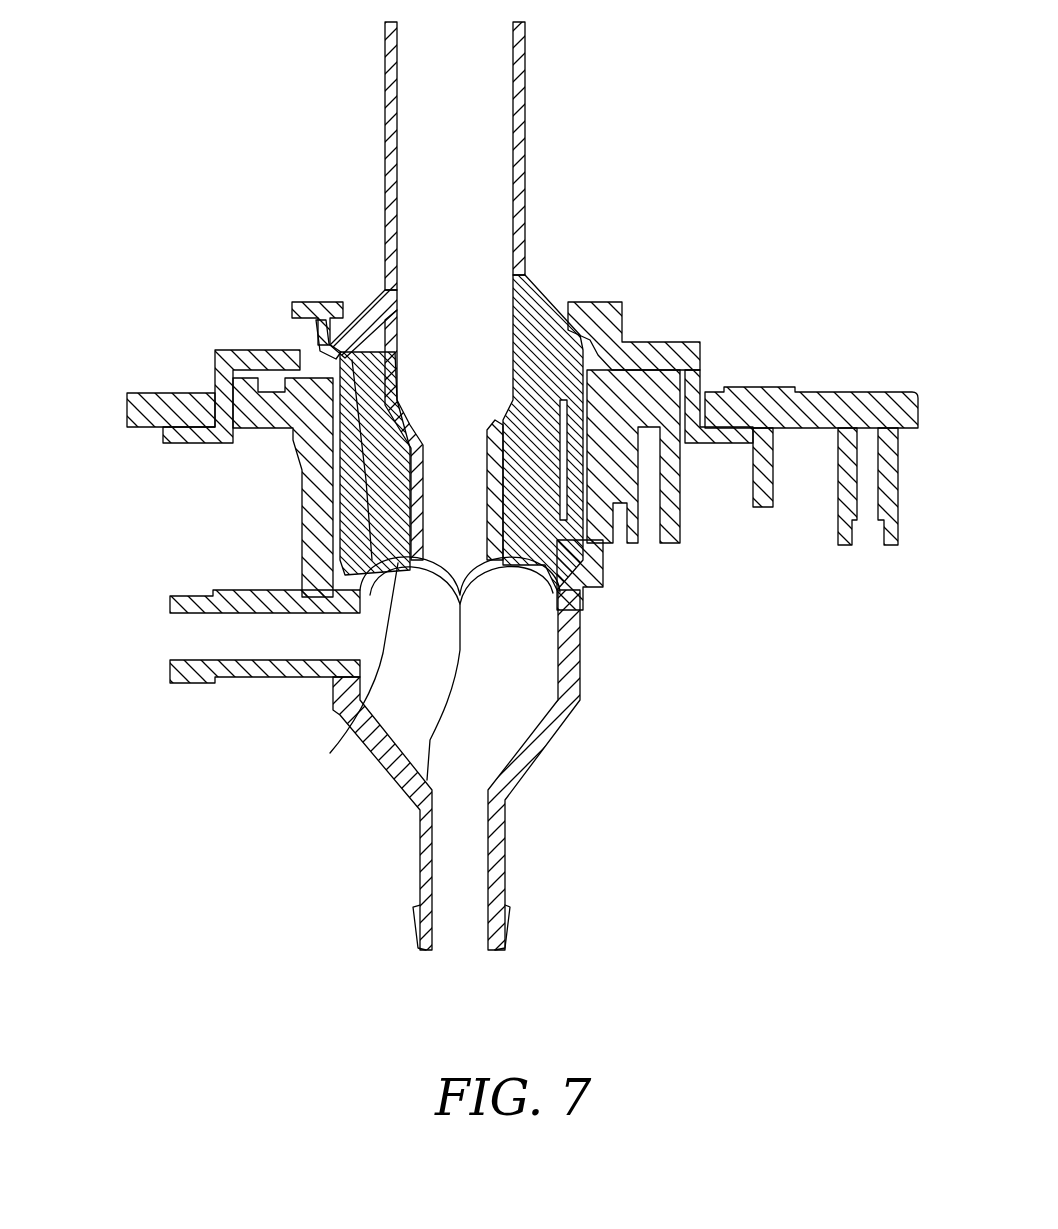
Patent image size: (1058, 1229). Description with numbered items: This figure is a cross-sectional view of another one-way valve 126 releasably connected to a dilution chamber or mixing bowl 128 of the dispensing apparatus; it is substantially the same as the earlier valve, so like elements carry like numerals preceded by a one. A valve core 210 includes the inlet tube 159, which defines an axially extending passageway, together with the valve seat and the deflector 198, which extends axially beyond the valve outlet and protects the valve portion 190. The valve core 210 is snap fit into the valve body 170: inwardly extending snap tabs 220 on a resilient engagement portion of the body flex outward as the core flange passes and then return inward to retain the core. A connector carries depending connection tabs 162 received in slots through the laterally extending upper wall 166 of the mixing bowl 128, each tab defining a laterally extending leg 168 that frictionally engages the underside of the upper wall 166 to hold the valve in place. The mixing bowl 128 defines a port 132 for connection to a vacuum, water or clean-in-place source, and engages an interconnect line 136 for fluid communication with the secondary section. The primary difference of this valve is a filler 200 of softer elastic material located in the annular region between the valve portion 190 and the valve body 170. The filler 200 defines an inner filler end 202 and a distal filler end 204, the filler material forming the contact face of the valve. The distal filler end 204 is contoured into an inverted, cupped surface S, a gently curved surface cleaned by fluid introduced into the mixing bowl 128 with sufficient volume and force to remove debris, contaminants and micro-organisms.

The one-way valve 126 is at (565, 272).
The dilution chamber or mixing bowl 128 is at (142, 566).
The first port 132 is at (263, 680).
The interconnect line 136 is at (505, 868).
The inlet tube 159 is at (525, 185).
The connection tabs 162 is at (218, 372).
The upper wall 166 is at (873, 390).
The leg 168 is at (193, 438).
The valve body 170 is at (313, 340).
The valve portion 190 is at (405, 514).
The deflector 198 is at (417, 760).
The filler 200 is at (370, 548).
The inner filler end 202 is at (583, 420).
The distal filler end 204 is at (557, 555).
The valve core 210 is at (366, 278).
The snap tabs 220 is at (293, 327).
The cupped cavity surface S is at (367, 717).